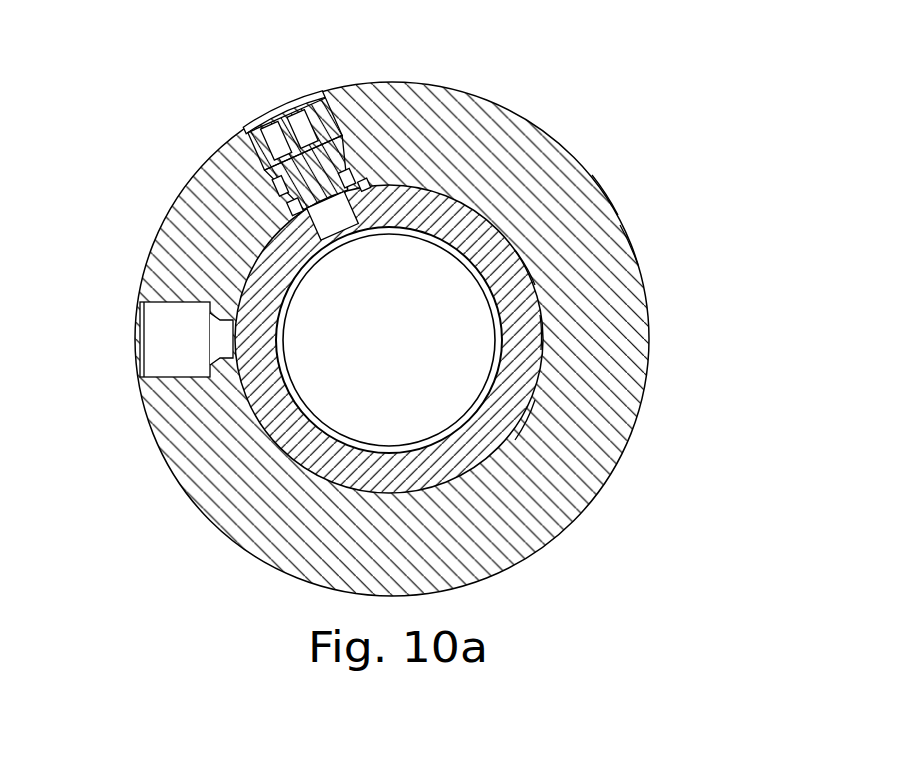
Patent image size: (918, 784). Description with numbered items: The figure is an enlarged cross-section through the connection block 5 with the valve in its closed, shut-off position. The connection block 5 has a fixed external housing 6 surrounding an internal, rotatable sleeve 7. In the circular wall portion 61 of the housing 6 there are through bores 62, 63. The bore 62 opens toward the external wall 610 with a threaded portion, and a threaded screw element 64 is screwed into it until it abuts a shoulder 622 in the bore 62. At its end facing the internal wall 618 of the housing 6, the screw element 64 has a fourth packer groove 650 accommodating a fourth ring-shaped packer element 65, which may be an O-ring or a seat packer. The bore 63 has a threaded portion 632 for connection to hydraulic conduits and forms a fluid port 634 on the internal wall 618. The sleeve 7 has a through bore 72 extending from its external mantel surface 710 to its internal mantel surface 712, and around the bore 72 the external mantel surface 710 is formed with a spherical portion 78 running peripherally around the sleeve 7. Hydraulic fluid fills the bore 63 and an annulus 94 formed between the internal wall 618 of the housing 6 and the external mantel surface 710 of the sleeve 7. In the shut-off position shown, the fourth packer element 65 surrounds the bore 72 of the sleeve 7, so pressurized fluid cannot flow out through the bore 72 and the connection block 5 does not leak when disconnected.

The connection block 5 is at (188, 77).
The external housing 6 is at (580, 165).
The circular wall portion 61 is at (600, 188).
The external wall 610 is at (625, 233).
The internal wall 618 is at (524, 276).
The through bore 62 is at (247, 131).
The threaded screw element 64 is at (264, 169).
The shoulder 622 is at (300, 197).
The fourth ring-shaped packer element 65 is at (291, 208).
The fourth packer groove 650 is at (283, 190).
The through bore 72 is at (300, 218).
The spherical portion 78 is at (367, 188).
The bore 63 is at (138, 305).
The threaded portion 632 is at (235, 361).
The fluid port 634 is at (210, 377).
The annulus 94 is at (543, 328).
The sleeve 7 is at (545, 387).
The external mantel surface 710 is at (525, 424).
The internal mantel surface 712 is at (430, 458).